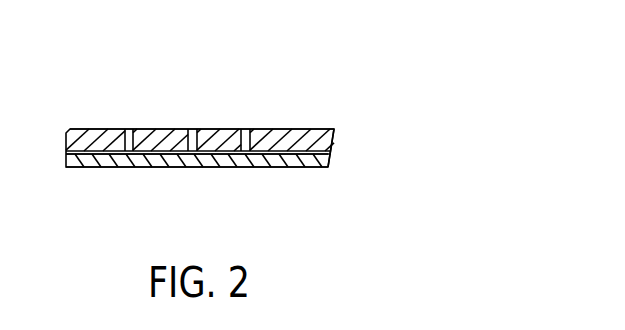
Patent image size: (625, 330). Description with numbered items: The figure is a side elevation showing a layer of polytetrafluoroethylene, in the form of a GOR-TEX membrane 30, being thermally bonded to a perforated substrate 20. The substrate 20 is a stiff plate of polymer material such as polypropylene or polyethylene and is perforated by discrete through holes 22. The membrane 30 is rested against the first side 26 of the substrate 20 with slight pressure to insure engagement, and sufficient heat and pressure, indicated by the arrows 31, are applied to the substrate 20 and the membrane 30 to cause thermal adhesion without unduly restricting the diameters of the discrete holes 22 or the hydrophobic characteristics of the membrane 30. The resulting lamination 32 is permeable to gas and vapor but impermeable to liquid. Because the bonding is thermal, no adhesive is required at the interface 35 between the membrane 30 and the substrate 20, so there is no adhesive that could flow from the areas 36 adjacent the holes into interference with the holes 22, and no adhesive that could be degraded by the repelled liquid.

The substrate 20 is at (58, 141).
The discrete through hole 22 is at (130, 129).
The first side 26 is at (332, 160).
The membrane 30 is at (66, 173).
The arrows 31 is at (113, 120).
The lamination 32 is at (97, 120).
The interface 35 is at (343, 143).
The areas adjacent the holes 36 is at (110, 168).